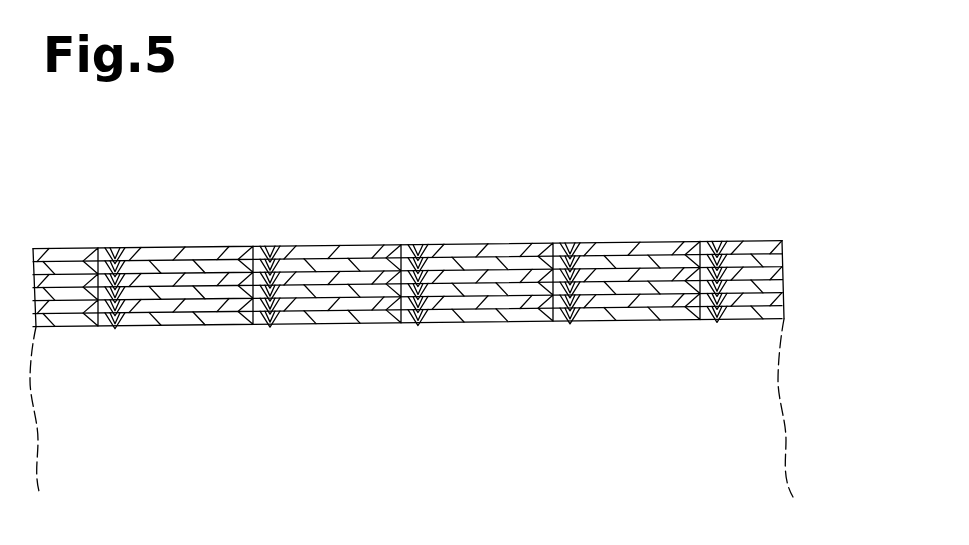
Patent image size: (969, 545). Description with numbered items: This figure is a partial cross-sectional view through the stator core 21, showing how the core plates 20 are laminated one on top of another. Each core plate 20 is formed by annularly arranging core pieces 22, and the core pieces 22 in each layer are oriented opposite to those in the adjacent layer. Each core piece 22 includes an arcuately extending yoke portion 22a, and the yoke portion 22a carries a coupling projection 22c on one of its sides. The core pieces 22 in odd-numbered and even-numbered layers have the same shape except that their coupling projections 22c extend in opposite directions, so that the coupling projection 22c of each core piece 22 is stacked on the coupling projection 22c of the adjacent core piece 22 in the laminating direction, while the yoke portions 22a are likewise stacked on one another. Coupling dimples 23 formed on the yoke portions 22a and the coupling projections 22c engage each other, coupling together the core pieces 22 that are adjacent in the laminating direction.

The core plate 20 is at (784, 244).
The stator core 21 is at (752, 242).
The core piece 22 is at (607, 270).
The yoke portion 22a is at (205, 303).
The coupling projection 22c is at (88, 313).
The coupling dimple 23 is at (116, 248).